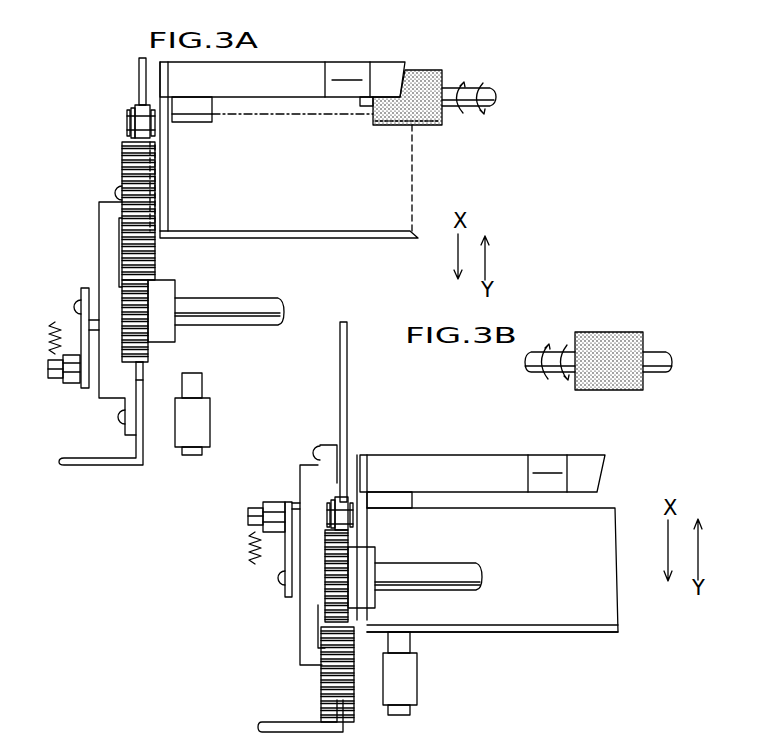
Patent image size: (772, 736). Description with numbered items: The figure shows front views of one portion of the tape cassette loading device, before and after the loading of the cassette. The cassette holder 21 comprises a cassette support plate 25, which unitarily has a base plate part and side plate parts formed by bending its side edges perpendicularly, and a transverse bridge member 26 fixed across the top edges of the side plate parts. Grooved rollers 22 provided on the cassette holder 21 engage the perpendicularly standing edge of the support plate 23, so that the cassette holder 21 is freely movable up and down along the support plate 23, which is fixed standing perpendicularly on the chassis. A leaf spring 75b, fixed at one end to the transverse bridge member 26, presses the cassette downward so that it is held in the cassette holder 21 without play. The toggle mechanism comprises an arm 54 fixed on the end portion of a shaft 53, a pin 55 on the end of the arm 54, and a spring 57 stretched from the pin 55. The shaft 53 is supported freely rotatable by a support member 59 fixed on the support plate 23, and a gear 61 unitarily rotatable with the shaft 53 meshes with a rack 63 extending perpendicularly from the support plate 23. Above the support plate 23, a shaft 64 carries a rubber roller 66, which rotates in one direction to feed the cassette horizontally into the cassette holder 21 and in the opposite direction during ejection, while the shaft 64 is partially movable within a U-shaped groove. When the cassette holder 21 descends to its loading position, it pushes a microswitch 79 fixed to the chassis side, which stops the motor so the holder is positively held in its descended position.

In FIG. 3A, the cassette holder 21 is at (316, 56).
In FIG. 3B, the cassette holder 21 is at (491, 453).
In FIG. 3A, the grooved rollers 22 is at (126, 116).
In FIG. 3B, the grooved rollers 22 is at (354, 513).
In FIG. 3A, the support plate 23 is at (138, 78).
In FIG. 3B, the support plate 23 is at (348, 375).
In FIG. 3A, the cassette support plate 25 is at (250, 240).
In FIG. 3B, the cassette support plate 25 is at (466, 633).
In FIG. 3A, the transverse bridge member 26 is at (276, 62).
In FIG. 3B, the transverse bridge member 26 is at (445, 455).
In FIG. 3A, the shaft 53 is at (257, 325).
In FIG. 3B, the shaft 53 is at (470, 565).
In FIG. 3A, the arm 54 is at (80, 330).
In FIG. 3B, the arm 54 is at (285, 550).
In FIG. 3A, the pin 55 is at (72, 385).
In FIG. 3B, the pin 55 is at (275, 503).
In FIG. 3A, the spring 57 is at (48, 338).
In FIG. 3B, the spring 57 is at (248, 538).
In FIG. 3A, the support member 59 is at (99, 226).
In FIG. 3B, the support member 59 is at (303, 478).
In FIG. 3A, the gear 61 is at (149, 352).
In FIG. 3B, the gear 61 is at (332, 577).
In FIG. 3A, the rack 63 is at (156, 252).
In FIG. 3B, the rack 63 is at (328, 678).
In FIG. 3A, the shaft 64 is at (500, 94).
In FIG. 3B, the shaft 64 is at (660, 344).
In FIG. 3A, the rubber roller 66 is at (421, 70).
In FIG. 3B, the rubber roller 66 is at (607, 332).
In FIG. 3A, the leaf spring 75b is at (199, 122).
In FIG. 3B, the leaf spring 75b is at (413, 500).
In FIG. 3A, the microswitch 79 is at (211, 417).
In FIG. 3B, the microswitch 79 is at (418, 680).